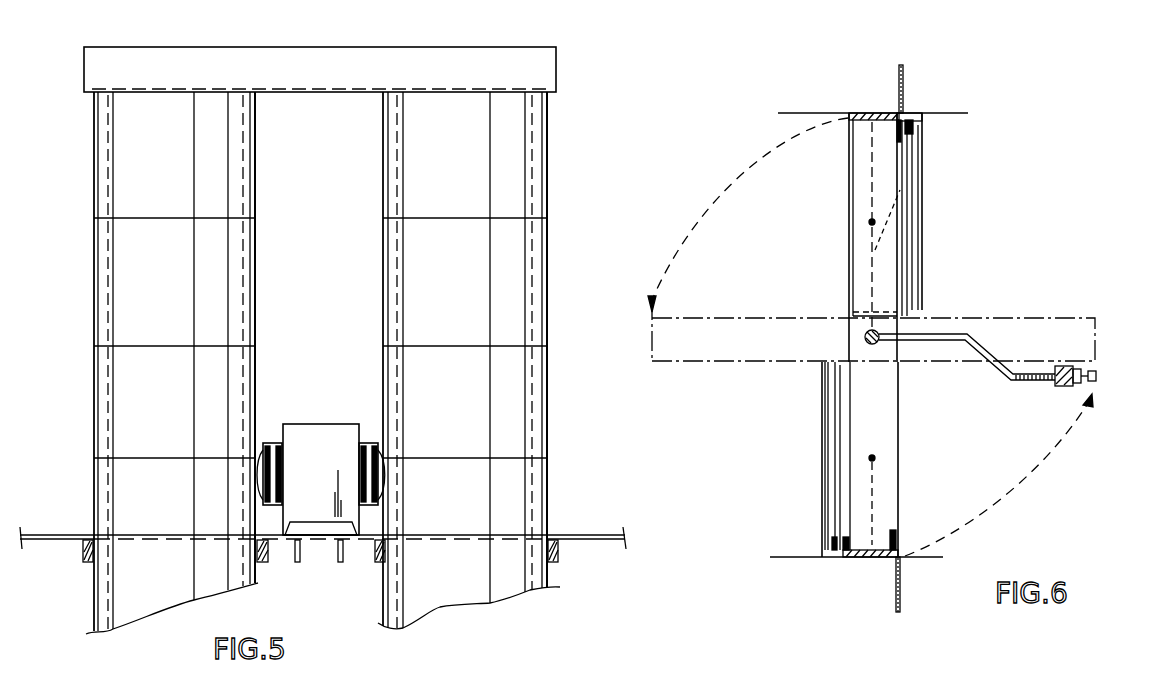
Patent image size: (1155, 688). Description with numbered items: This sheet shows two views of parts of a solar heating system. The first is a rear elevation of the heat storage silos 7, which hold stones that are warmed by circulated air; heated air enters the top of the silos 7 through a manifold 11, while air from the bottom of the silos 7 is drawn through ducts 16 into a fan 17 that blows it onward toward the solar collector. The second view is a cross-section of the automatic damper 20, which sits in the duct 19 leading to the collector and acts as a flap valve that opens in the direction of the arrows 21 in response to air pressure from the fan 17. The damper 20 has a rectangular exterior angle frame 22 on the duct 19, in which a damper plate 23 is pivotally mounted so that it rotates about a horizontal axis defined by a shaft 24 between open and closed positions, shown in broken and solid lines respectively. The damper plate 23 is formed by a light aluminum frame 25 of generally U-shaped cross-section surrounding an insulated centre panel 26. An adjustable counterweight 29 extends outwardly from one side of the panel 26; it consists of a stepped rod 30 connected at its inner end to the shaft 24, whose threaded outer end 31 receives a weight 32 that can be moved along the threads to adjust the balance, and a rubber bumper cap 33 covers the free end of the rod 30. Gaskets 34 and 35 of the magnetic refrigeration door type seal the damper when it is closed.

In FIG. 5, the heat storage silos 7 is at (156, 262).
In FIG. 5, the manifold 11 is at (342, 75).
In FIG. 5, the ducts 16 is at (370, 445).
In FIG. 5, the fan 17 is at (323, 466).
In FIG. 6, the duct 19 is at (808, 112).
In FIG. 6, the automatic damper 20 is at (877, 305).
In FIG. 6, the arrows 21 is at (710, 192).
In FIG. 6, the rectangular exterior angle frame 22 is at (896, 93).
In FIG. 6, the damper plate 23 is at (848, 285).
In FIG. 6, the shaft 24 is at (864, 338).
In FIG. 6, the aluminum frame 25 is at (848, 142).
In FIG. 6, the insulated centre panel 26 is at (875, 403).
In FIG. 6, the adjustable counterweight 29 is at (1013, 380).
In FIG. 6, the stepped rod 30 is at (950, 336).
In FIG. 6, the outer end 31 is at (1080, 366).
In FIG. 6, the weight 32 is at (1068, 387).
In FIG. 6, the rubber bumper cap 33 is at (1097, 376).
In FIG. 6, the gasket 34 is at (912, 215).
In FIG. 6, the gasket 35 is at (838, 472).